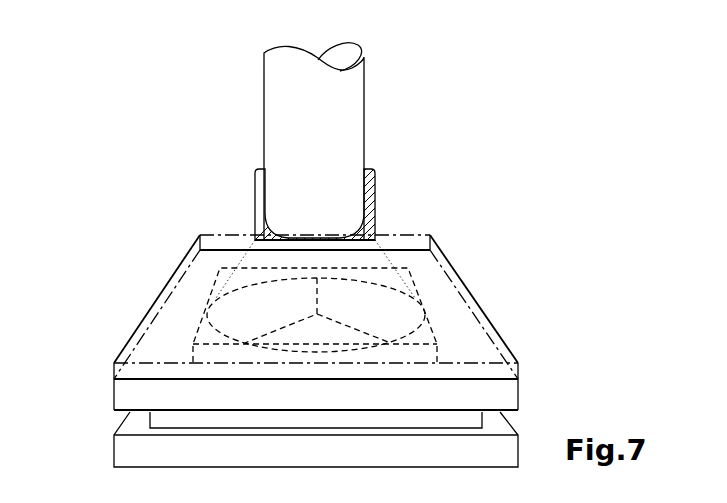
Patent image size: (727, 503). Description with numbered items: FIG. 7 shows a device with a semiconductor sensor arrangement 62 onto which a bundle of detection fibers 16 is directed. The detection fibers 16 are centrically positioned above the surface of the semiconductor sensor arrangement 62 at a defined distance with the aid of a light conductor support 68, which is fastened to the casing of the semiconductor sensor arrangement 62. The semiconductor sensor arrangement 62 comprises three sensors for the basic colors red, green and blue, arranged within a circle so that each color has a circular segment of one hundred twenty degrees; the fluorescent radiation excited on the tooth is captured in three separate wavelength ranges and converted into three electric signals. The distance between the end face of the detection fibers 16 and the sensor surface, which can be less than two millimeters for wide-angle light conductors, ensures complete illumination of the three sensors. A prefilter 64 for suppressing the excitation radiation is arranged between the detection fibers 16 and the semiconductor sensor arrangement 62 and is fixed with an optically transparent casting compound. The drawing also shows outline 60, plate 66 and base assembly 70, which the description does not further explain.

The detection fibers 16 is at (288, 78).
The shroud outline 60 is at (482, 308).
The semiconductor sensor arrangement 62 is at (257, 298).
The prefilter 64 is at (420, 290).
The top plate 66 is at (493, 392).
The light conductor support 68 is at (375, 206).
The base plate assembly 70 is at (74, 378).